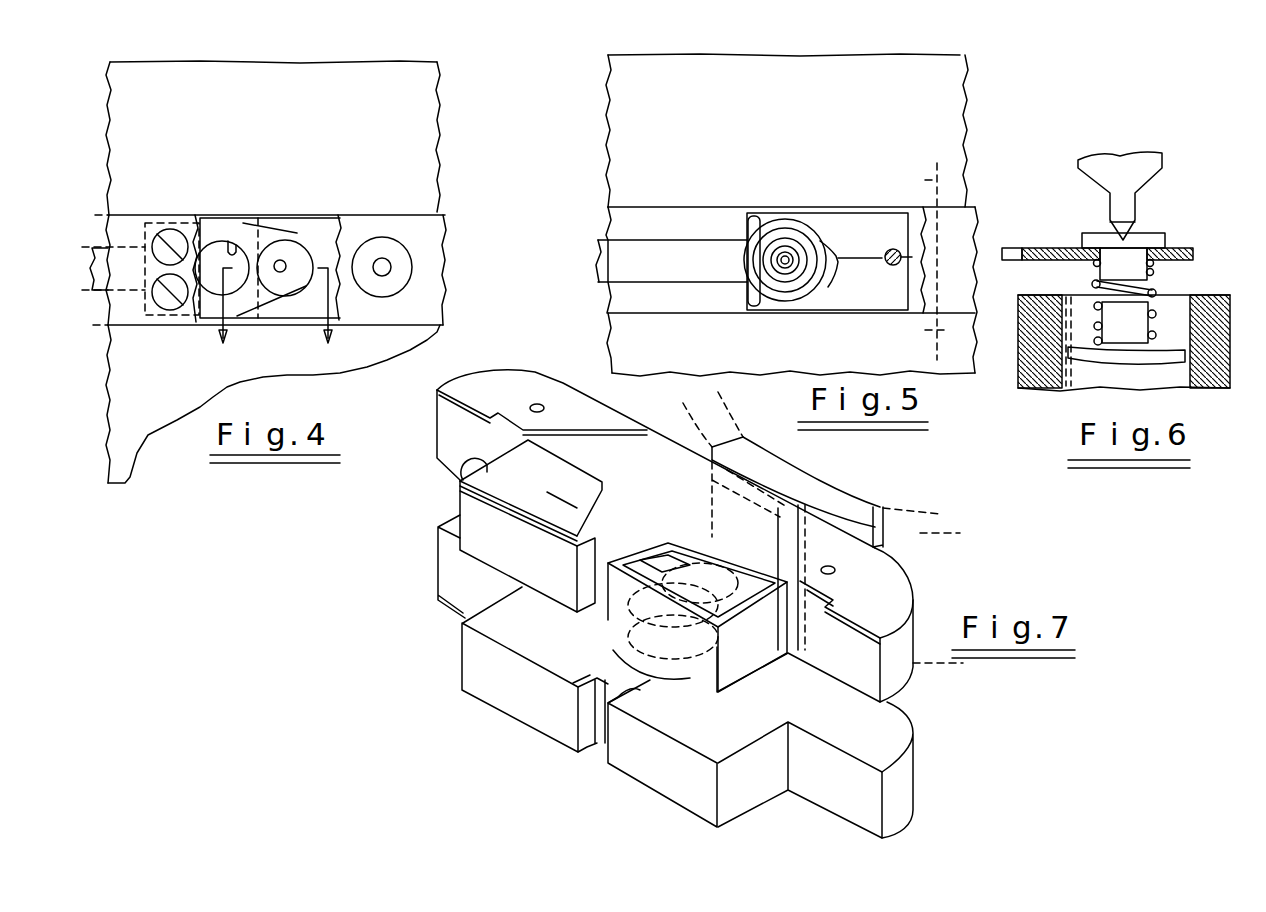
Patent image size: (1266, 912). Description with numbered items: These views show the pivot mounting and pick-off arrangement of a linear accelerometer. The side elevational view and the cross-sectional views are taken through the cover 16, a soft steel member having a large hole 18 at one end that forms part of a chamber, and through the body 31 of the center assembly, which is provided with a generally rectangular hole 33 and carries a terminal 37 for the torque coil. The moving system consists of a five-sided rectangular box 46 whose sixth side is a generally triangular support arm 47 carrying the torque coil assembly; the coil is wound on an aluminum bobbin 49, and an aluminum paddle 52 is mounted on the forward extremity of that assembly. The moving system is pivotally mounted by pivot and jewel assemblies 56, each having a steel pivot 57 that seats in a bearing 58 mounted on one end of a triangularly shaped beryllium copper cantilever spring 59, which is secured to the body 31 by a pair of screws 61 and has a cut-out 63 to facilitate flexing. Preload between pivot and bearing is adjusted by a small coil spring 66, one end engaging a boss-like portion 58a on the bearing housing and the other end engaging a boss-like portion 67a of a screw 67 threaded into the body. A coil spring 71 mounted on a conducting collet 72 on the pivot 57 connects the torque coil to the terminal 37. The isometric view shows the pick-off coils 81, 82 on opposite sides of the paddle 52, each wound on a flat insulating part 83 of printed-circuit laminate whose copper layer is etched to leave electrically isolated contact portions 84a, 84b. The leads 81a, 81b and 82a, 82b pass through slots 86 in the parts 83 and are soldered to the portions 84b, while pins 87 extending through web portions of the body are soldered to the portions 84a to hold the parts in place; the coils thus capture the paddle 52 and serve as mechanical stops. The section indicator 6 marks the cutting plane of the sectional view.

In FIG. 4, the cover 16 is at (118, 122).
In FIG. 5, the cover 16 is at (958, 142).
In FIG. 5, the large hole 18 is at (965, 173).
In FIG. 4, the part or body 31 is at (430, 242).
In FIG. 5, the part or body 31 is at (965, 224).
In FIG. 6, the part or body 31 is at (1046, 382).
In FIG. 5, the rectangular hole 33 is at (938, 280).
In FIG. 4, the terminal 37 is at (385, 265).
In FIG. 5, the terminal 37 is at (893, 268).
In FIG. 4, the rectangular box 46 is at (330, 241).
In FIG. 5, the rectangular box 46 is at (872, 232).
In FIG. 4, the support arm 47 is at (90, 282).
In FIG. 5, the support arm 47 is at (641, 271).
In FIG. 7, the bobbin 49 is at (840, 503).
In FIG. 7, the paddle 52 is at (620, 667).
In FIG. 6, the pivot and jewel assembly 56 is at (1205, 188).
In FIG. 5, the pivot 57 is at (795, 243).
In FIG. 6, the pivot 57 is at (1132, 226).
In FIG. 6, the bearing 58 is at (1168, 238).
In FIG. 4, the boss-like portion 58a is at (281, 262).
In FIG. 6, the boss-like portion 58a is at (1112, 270).
In FIG. 4, the cantilever spring 59 is at (213, 225).
In FIG. 6, the cantilever spring 59 is at (1196, 254).
In FIG. 4, the screws 61 is at (168, 237).
In FIG. 4, the cut-out 63 is at (228, 250).
In FIG. 6, the coil spring 66 is at (1156, 288).
In FIG. 6, the screw 67 is at (1140, 358).
In FIG. 6, the boss-like portion 67a is at (1135, 325).
In FIG. 5, the coil spring 71 is at (866, 260).
In FIG. 5, the collet 72 is at (783, 252).
In FIG. 7, the pick-off coil 81 is at (697, 510).
In FIG. 7, the lead 81a is at (619, 498).
In FIG. 7, the lead 81b is at (668, 556).
In FIG. 7, the pick-off coil 82 is at (667, 683).
In FIG. 7, the lead 82a is at (573, 683).
In FIG. 7, the lead 82b is at (633, 703).
In FIG. 7, the part 83 is at (437, 445).
In FIG. 7, the contact portion 84a is at (455, 620).
In FIG. 7, the contact portion 84b is at (470, 472).
In FIG. 7, the slot 86 is at (583, 578).
In FIG. 7, the pin 87 is at (545, 406).
In FIG. 4, the section line 6 is at (274, 319).